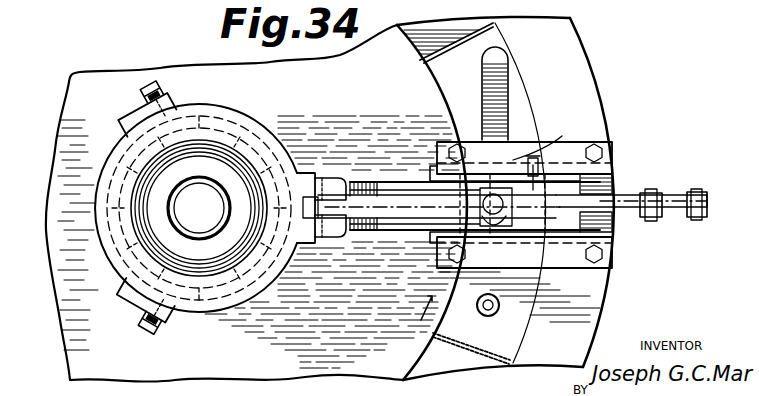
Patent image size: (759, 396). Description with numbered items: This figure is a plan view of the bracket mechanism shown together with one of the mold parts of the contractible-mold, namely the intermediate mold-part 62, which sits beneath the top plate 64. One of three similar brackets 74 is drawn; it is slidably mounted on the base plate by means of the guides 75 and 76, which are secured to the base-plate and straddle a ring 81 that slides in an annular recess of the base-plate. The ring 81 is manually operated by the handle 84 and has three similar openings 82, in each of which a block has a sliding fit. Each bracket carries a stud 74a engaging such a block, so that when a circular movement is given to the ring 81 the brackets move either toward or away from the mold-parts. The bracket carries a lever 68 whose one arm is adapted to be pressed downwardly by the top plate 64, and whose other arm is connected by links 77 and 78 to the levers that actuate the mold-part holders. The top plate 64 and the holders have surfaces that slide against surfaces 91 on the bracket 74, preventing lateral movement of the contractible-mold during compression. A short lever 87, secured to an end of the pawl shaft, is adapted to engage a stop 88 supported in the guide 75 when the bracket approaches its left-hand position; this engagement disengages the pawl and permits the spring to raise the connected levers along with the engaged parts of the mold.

The mold-part 62 is at (223, 163).
The top plate 64 is at (277, 147).
The surfaces 91 is at (328, 182).
The bracket 74 is at (410, 224).
The stud 74a is at (495, 200).
The stop 88 is at (513, 160).
The short lever 87 is at (550, 137).
The guide 75 is at (570, 147).
The guide 76 is at (563, 258).
The lever 68 is at (628, 195).
The link 77 is at (652, 218).
The link 78 is at (702, 218).
The ring 81 is at (545, 337).
The opening 82 is at (487, 96).
The handle 84 is at (478, 298).